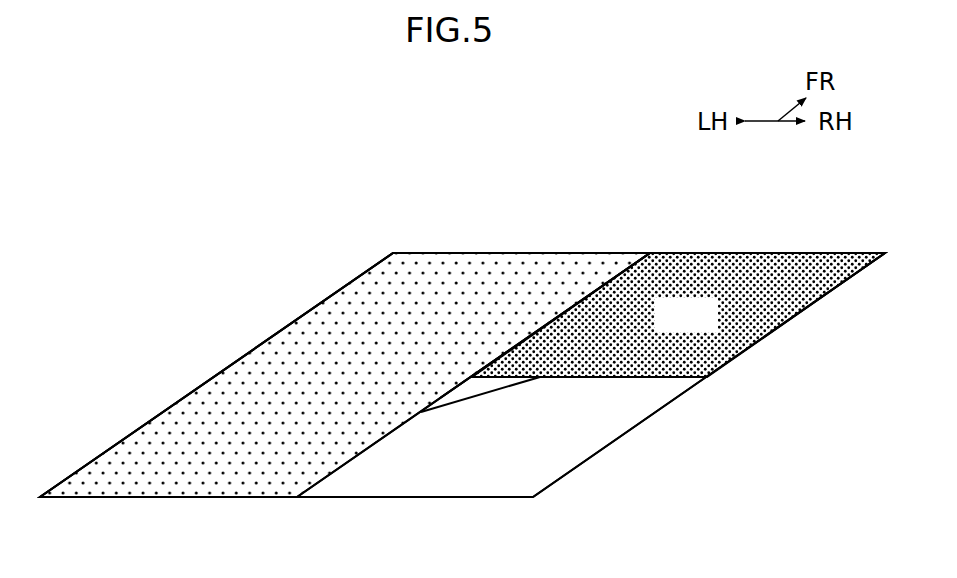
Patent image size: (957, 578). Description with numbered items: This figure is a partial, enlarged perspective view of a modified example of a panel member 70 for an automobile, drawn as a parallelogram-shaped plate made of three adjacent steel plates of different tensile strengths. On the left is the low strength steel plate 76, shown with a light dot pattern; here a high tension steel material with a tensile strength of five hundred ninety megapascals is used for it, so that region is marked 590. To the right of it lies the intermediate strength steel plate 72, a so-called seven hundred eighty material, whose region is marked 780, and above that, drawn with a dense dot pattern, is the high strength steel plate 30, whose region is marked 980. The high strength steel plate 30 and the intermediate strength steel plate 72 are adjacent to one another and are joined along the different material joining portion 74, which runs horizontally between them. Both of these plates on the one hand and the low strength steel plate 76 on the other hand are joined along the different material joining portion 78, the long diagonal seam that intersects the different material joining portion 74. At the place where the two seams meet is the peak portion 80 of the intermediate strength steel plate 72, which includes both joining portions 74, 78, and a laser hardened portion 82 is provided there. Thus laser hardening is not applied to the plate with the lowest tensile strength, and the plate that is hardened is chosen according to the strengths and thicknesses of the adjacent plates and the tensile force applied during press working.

The high strength steel plate 30 is at (810, 290).
The panel member 70 is at (766, 250).
The intermediate strength steel plate 72 is at (585, 442).
The different material joining portion 74 is at (663, 378).
The low strength steel plate 76 is at (250, 370).
The different material joining portion 78 is at (336, 473).
The peak portion 80 is at (467, 388).
The laser hardened portion 82 is at (453, 410).
The first region 590 is at (345, 375).
The second region 780 is at (415, 465).
The third region 980 is at (678, 315).